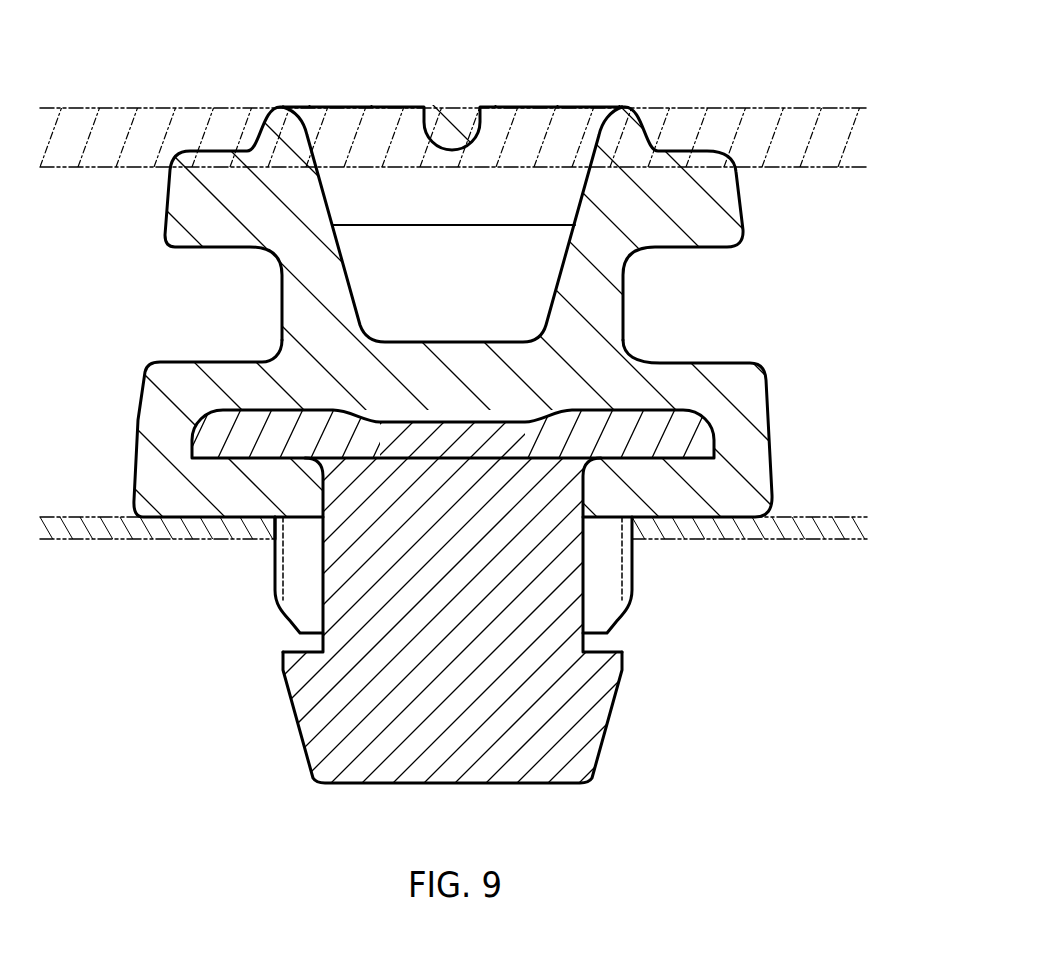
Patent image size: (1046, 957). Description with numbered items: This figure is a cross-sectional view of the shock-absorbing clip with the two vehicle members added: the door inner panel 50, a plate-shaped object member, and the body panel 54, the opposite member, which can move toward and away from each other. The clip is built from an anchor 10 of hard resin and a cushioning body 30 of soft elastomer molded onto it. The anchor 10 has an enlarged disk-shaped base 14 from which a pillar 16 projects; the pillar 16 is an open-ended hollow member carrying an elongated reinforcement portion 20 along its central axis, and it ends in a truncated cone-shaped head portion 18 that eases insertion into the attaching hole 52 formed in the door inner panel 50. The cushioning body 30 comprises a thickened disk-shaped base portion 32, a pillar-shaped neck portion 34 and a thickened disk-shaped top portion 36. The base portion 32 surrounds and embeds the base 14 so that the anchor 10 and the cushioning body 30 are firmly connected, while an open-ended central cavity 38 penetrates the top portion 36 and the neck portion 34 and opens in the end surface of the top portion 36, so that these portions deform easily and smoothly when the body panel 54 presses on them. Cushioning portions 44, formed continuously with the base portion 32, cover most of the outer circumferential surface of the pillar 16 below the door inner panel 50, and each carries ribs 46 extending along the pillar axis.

The anchor 10 is at (512, 555).
The base 14 is at (258, 432).
The pillar 16 is at (586, 585).
The head portion 18 is at (601, 742).
The reinforcement portion 20 is at (370, 604).
The cushioning body 30 is at (523, 282).
The base portion 32 is at (746, 386).
The neck portion 34 is at (601, 305).
The top portion 36 is at (187, 201).
The cavity 38 is at (525, 203).
The cushioning portions 44 is at (301, 560).
The ribs 46 is at (636, 556).
The door inner panel 50 is at (823, 532).
The attaching hole 52 is at (263, 528).
The body panel 54 is at (726, 118).